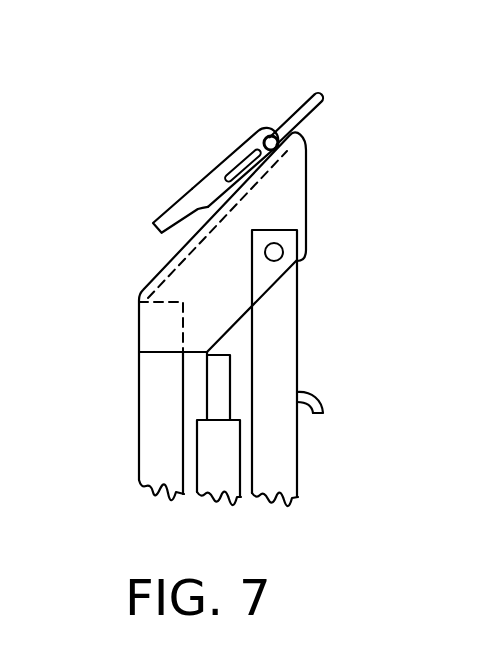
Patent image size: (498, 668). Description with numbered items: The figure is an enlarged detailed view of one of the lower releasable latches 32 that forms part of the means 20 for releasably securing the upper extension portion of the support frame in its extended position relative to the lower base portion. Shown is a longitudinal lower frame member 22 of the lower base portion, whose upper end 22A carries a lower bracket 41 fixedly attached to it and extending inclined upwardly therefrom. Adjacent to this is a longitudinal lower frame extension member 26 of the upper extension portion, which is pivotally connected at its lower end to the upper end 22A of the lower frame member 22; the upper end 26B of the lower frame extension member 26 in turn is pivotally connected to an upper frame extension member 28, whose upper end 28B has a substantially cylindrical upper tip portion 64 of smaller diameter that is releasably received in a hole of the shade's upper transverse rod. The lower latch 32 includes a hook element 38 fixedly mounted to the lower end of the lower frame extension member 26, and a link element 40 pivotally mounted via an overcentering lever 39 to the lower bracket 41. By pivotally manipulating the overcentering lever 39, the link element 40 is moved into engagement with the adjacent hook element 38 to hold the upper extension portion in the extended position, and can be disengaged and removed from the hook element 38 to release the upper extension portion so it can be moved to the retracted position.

The means for releasably securing the upper extension portion 20 is at (220, 88).
The lower frame member 22 is at (153, 492).
The upper end of lower frame member 22A is at (148, 366).
The lower frame extension member 26 is at (288, 473).
The upper end of lower frame extension member 26B is at (298, 277).
The upper frame extension member 28 is at (215, 492).
The upper end of upper frame extension member 28B is at (208, 457).
The lower releasable latch 32 is at (225, 142).
The hook element 38 is at (313, 393).
The overcentering lever 39 is at (172, 212).
The link element 40 is at (302, 110).
The lower bracket 41 is at (192, 268).
The upper tip portion 64 is at (215, 377).